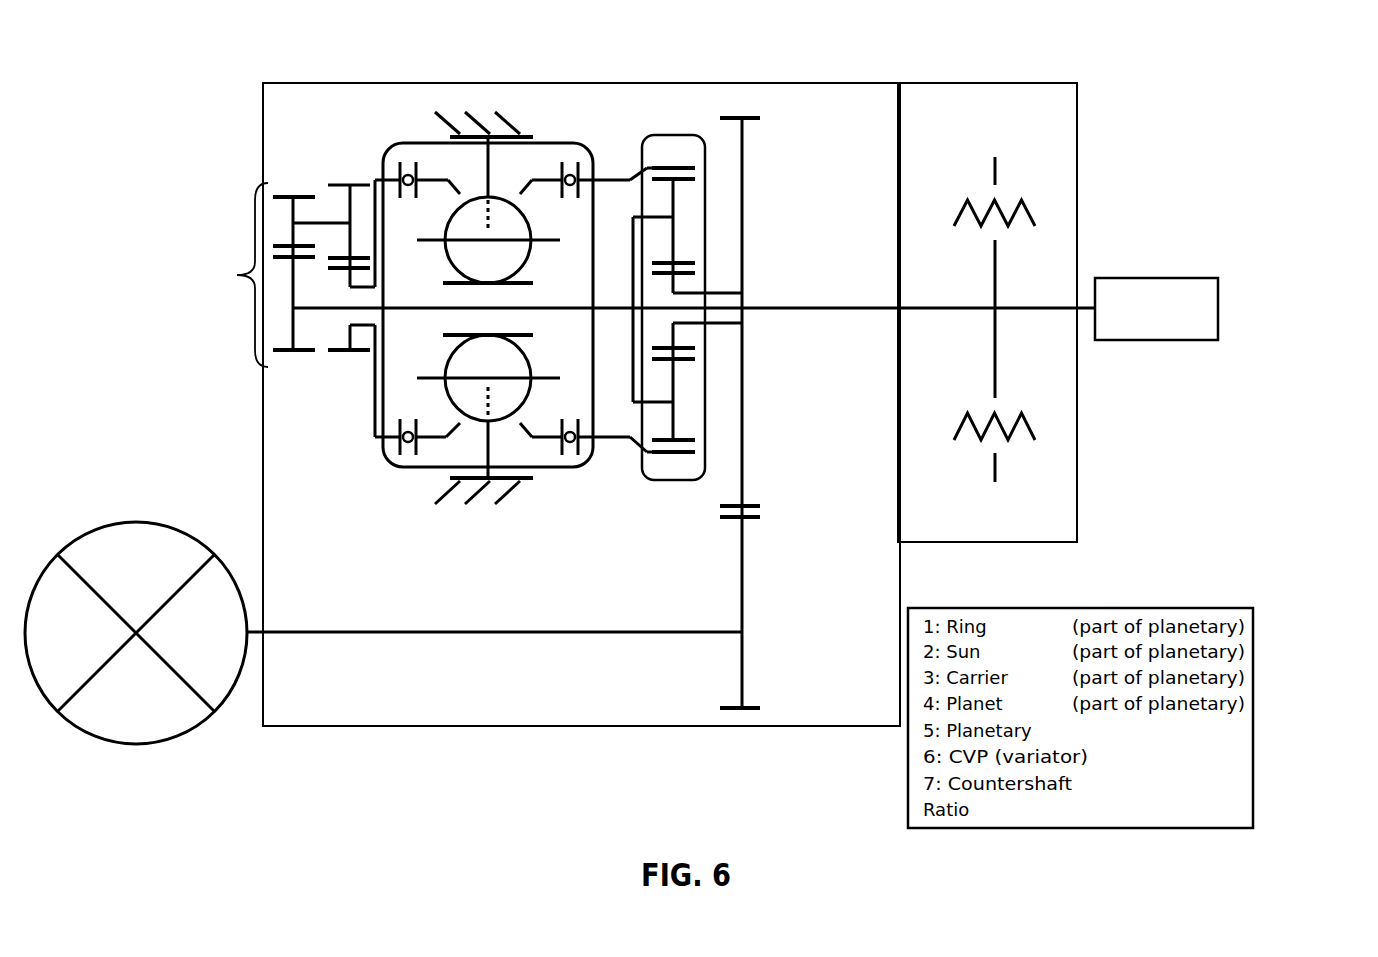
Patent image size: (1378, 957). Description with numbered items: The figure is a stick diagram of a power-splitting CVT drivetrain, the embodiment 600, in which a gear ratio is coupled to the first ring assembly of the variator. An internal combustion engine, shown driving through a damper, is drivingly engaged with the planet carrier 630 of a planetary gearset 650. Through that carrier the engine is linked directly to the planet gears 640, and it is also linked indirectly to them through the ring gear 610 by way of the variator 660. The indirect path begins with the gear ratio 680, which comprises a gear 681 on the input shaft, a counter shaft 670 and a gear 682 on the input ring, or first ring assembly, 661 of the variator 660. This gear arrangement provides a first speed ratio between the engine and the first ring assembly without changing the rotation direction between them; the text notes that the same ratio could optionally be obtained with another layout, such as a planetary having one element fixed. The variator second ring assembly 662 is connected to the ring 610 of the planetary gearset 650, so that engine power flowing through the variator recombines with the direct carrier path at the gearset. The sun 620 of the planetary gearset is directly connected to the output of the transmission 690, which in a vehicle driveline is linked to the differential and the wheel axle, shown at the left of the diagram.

The embodiment 600 is at (211, 158).
The ring gear 610 is at (690, 460).
The sun 620 is at (673, 337).
The planet carrier 630 is at (634, 245).
The planet gears 640 is at (673, 193).
The planetary gearset 650 is at (678, 135).
The variator 660 is at (405, 143).
The input ring (first ring assembly) 661 is at (372, 420).
The second ring assembly 662 is at (583, 445).
The counter shaft 670 is at (326, 210).
The gear ratio 680 is at (180, 258).
The gear 681 is at (280, 350).
The gear 682 is at (357, 352).
The output of the transmission 690 is at (742, 683).